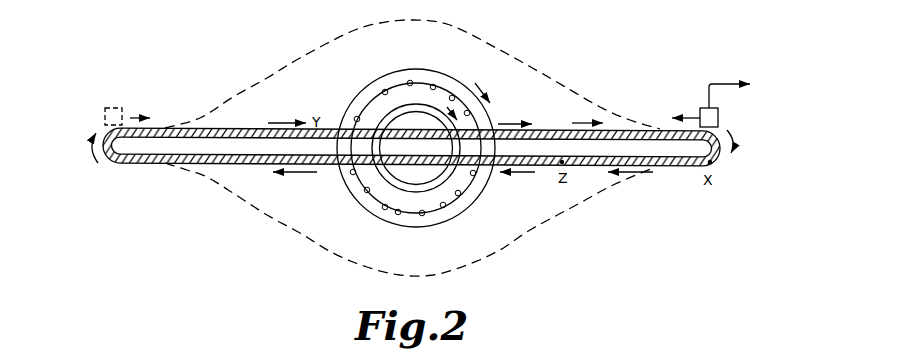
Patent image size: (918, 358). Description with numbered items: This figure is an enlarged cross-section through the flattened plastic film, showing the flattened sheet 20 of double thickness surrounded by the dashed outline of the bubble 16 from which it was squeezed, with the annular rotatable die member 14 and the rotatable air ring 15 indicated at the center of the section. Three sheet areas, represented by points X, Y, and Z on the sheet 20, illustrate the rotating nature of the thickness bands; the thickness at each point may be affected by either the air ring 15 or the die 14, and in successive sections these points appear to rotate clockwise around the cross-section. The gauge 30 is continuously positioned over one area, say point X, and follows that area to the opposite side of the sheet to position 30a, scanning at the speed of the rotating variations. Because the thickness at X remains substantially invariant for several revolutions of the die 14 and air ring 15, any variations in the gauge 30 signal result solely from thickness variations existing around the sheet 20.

The annular rotatable die member 14 is at (381, 178).
The rotatable air ring 15 is at (365, 98).
The bubble 16 is at (525, 63).
The sheet 20 is at (542, 128).
The gauge 30 is at (718, 117).
The gauge position 30a is at (105, 112).